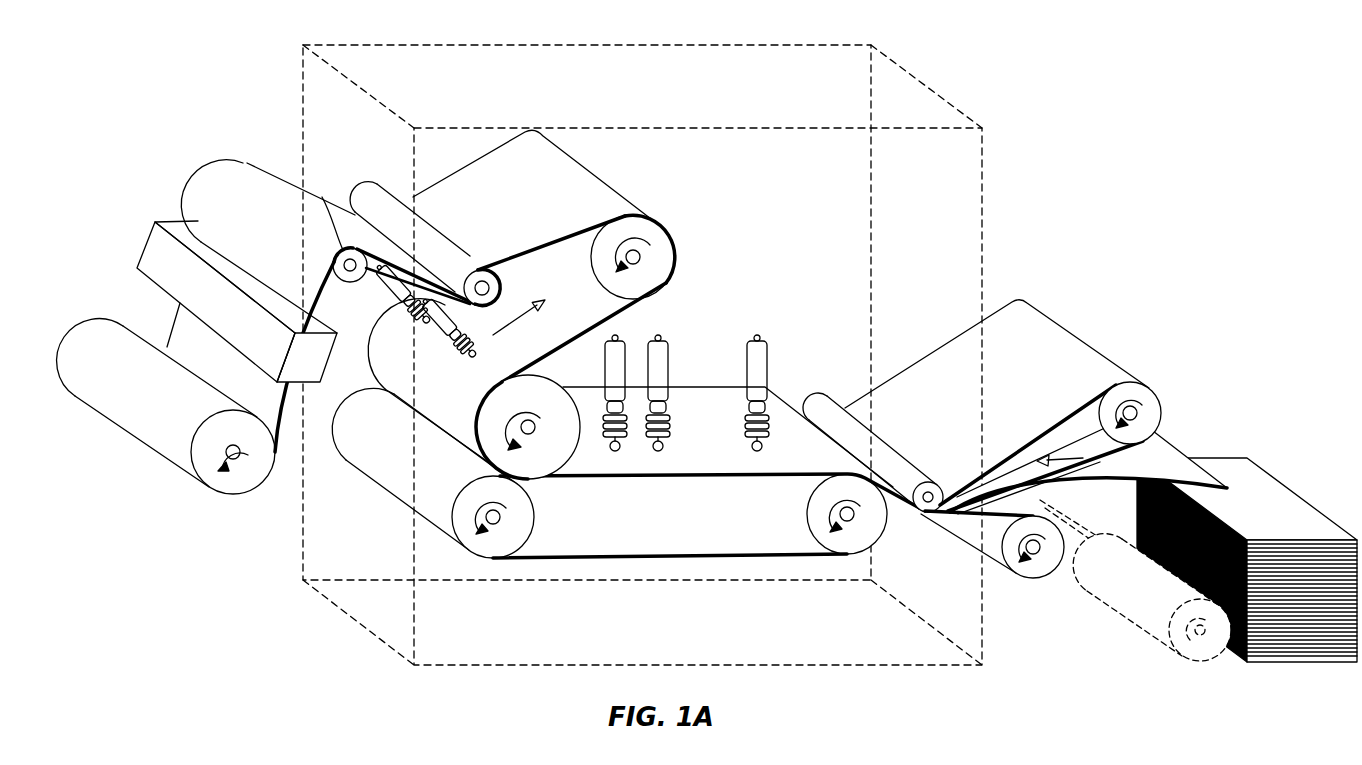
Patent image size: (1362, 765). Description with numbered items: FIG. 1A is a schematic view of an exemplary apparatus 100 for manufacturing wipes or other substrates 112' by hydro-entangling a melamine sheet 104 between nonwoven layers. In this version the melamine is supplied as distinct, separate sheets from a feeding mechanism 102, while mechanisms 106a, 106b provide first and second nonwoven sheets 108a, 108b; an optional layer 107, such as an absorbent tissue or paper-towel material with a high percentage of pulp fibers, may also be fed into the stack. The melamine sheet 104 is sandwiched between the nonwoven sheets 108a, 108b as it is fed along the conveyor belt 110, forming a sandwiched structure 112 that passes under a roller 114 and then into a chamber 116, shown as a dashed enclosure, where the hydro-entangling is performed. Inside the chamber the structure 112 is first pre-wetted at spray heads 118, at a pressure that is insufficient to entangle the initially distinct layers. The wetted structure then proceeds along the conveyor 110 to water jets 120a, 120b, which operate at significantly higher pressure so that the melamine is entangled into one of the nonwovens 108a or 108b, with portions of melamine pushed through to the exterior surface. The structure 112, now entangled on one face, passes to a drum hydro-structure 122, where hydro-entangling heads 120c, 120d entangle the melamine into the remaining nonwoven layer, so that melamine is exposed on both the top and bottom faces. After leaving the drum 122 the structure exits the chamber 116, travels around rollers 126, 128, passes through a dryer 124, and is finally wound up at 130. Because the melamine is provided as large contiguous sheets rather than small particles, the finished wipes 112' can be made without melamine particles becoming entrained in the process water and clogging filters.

The apparatus 100 is at (1197, 119).
The feeding mechanism 102 is at (1270, 662).
The melamine sheet 104 is at (1160, 448).
The first nonwoven providing mechanism 106a is at (1155, 400).
The second nonwoven providing mechanism 106b is at (1038, 578).
The optional layer 107 is at (1183, 657).
The first nonwoven sheet 108a is at (1023, 320).
The second nonwoven sheet 108b is at (970, 517).
The conveyor belt 110 is at (665, 479).
The sandwiched structure 112 is at (542, 327).
The wipes or other substrates 112' is at (195, 374).
The roller 114 is at (818, 408).
The chamber 116 is at (683, 355).
The spray heads 118 is at (762, 360).
The water jet 120a is at (663, 367).
The water jet 120b is at (620, 363).
The hydro-entangling head 120c is at (378, 292).
The hydro-entangling head 120d is at (420, 305).
The drum hydro-structure 122 is at (540, 440).
The dryer 124 is at (183, 226).
The roller 126 is at (497, 277).
The roller 128 is at (323, 192).
The wind-up 130 is at (243, 460).